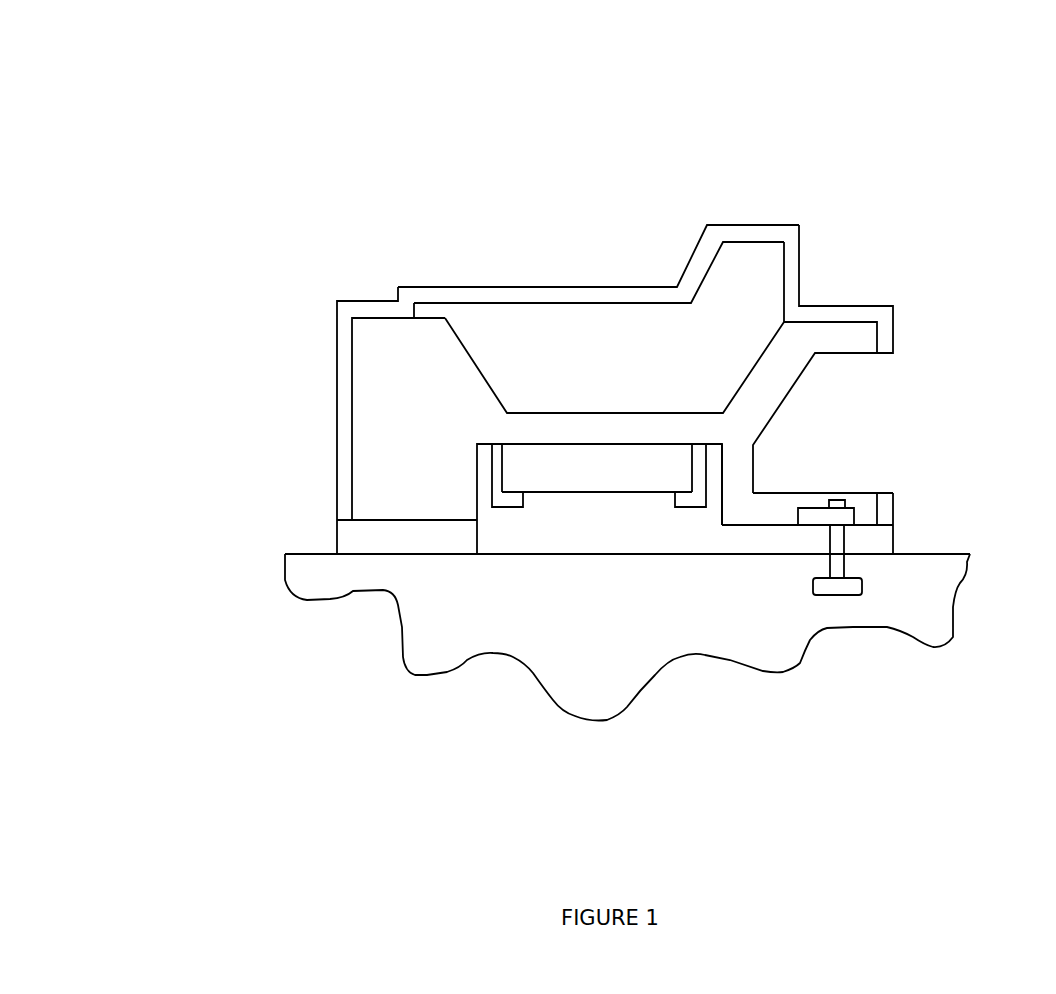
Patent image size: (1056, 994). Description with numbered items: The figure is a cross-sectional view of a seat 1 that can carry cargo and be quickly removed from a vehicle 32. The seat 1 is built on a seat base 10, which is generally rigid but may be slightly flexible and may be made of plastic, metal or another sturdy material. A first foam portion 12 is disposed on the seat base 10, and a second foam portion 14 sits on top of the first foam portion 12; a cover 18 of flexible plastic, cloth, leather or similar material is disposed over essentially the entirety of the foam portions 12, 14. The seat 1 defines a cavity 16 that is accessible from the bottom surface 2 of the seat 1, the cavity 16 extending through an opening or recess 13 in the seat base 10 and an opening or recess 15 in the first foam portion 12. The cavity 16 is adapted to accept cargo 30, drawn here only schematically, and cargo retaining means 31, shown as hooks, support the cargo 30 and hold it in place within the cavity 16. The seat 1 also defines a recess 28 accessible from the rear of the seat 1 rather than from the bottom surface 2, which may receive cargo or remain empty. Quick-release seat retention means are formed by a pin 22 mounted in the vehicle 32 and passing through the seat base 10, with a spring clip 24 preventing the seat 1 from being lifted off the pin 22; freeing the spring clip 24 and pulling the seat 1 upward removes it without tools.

The seat 1 is at (832, 132).
The bottom surface 2 is at (567, 556).
The seat base 10 is at (337, 537).
The first foam portion 12 is at (523, 413).
The opening or recess 13 is at (718, 553).
The second foam portion 14 is at (632, 303).
The opening or recess 15 is at (475, 488).
The cavity 16 is at (588, 544).
The cover 18 is at (337, 410).
The pin 22 is at (853, 597).
The spring clip 24 is at (798, 527).
The recess 28 is at (817, 444).
The cargo 30 is at (567, 493).
The cargo retaining means 31 is at (503, 507).
The vehicle 32 is at (940, 554).